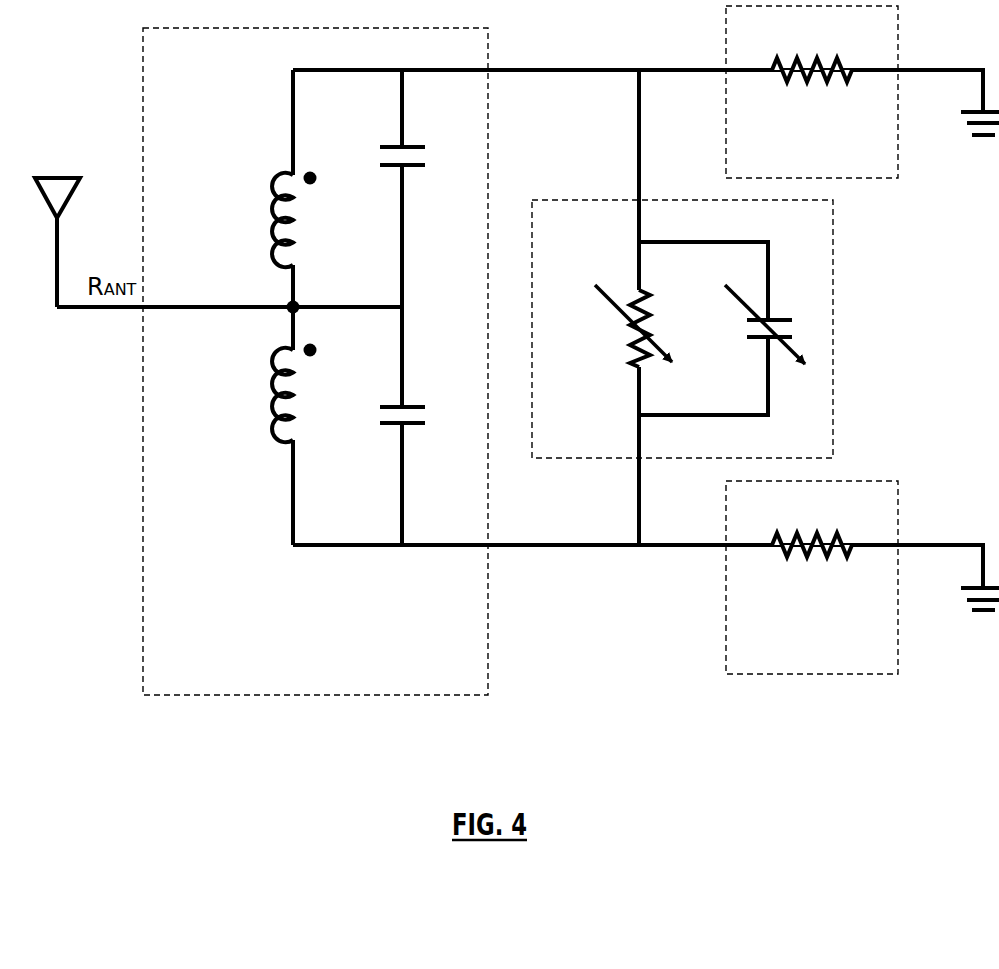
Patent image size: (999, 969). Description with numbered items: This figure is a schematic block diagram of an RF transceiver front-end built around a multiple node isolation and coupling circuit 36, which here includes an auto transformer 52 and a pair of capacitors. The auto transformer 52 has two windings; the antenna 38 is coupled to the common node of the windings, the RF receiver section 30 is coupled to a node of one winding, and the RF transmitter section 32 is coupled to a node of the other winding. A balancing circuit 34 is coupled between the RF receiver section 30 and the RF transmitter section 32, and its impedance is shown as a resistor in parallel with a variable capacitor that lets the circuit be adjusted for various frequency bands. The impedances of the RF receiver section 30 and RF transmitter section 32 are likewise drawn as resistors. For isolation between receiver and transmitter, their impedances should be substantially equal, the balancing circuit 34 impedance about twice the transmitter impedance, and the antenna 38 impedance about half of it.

The RF receiver section 30 is at (865, 164).
The RF transmitter section 32 is at (865, 659).
The balancing circuit 34 is at (574, 430).
The multiple node isolation and coupling circuit 36 is at (410, 681).
The antenna 38 is at (69, 167).
The auto transformer 52 is at (398, 579).